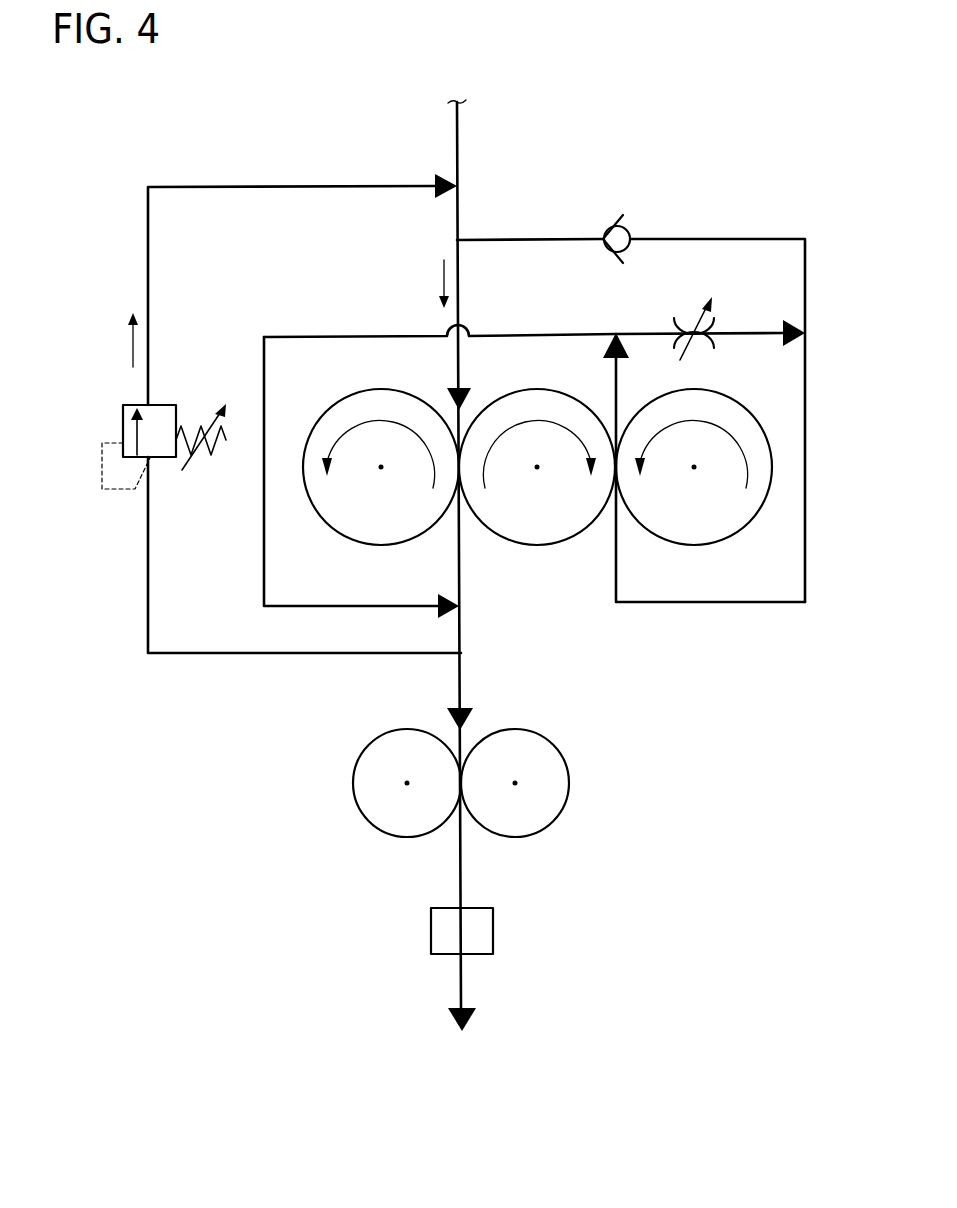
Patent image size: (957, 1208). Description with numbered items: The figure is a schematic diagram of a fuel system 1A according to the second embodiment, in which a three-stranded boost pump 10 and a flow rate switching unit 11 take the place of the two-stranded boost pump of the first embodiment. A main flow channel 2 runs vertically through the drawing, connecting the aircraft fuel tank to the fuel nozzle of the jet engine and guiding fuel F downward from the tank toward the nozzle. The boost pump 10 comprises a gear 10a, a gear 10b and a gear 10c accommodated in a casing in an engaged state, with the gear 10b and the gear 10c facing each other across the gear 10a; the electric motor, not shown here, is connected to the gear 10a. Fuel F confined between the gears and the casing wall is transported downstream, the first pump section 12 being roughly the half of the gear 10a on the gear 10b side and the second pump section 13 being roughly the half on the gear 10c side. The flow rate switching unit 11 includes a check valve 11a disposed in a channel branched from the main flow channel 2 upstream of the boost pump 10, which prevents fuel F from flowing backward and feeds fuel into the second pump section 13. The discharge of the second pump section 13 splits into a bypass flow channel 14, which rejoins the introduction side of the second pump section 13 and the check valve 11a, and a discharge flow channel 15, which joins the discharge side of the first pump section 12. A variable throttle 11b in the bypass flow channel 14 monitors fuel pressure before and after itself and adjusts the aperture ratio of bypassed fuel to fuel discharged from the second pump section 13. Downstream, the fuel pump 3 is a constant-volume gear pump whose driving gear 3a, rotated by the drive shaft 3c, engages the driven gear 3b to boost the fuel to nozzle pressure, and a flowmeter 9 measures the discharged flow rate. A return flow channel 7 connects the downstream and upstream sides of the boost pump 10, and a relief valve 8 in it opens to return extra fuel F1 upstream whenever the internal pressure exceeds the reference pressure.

The fuel system 1A is at (206, 165).
The main flow channel 2 is at (459, 128).
The fuel pump 3 is at (461, 810).
The gear 3a is at (550, 797).
The gear 3b is at (370, 800).
The drive shaft 3c is at (517, 782).
The return flow channel 7 is at (147, 600).
The relief valve 8 is at (188, 382).
The flowmeter 9 is at (493, 928).
The boost pump 10 is at (534, 539).
The gear 10a is at (503, 512).
The gear 10b is at (325, 512).
The gear 10c is at (656, 510).
The flow rate switching unit 11 is at (708, 210).
The check valve 11a is at (606, 232).
The variable throttle 11b is at (656, 317).
The first pump section 12 is at (303, 384).
The second pump section 13 is at (777, 395).
The bypass flow channel 14 is at (750, 333).
The discharge flow channel 15 is at (516, 333).
The fuel F is at (444, 288).
The extra fuel F1 is at (133, 360).